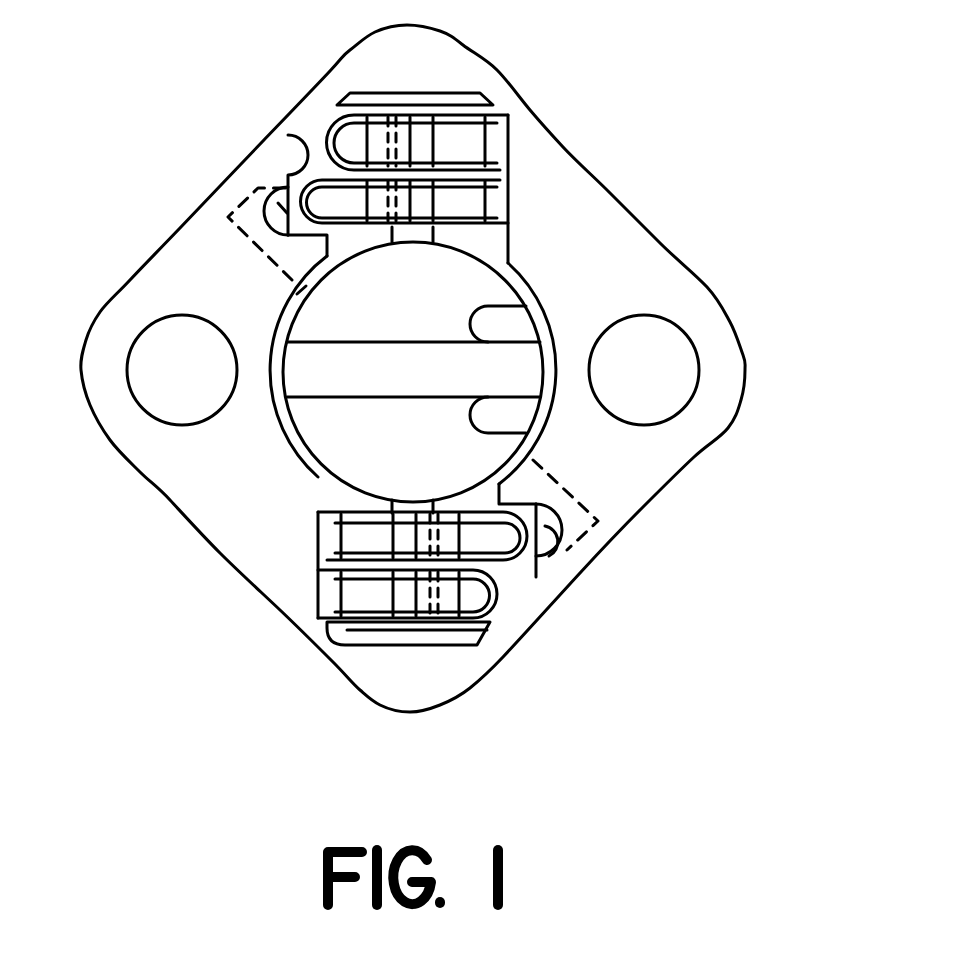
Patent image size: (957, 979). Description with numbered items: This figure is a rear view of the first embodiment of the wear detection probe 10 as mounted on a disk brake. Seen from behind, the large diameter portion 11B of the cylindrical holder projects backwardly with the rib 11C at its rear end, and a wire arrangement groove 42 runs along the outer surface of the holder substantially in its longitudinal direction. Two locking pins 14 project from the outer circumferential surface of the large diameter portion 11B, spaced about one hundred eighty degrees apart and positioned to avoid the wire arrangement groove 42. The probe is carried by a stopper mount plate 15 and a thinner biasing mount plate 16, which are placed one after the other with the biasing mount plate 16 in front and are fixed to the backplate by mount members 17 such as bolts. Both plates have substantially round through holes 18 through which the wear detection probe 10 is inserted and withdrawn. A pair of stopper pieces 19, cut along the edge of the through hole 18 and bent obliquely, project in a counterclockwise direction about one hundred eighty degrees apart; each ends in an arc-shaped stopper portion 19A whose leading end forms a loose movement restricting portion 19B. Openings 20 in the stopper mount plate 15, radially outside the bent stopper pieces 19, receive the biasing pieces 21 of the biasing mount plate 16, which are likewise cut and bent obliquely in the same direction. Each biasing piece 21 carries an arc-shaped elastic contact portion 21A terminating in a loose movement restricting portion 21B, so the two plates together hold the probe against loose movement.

The wear detection probe 10 is at (560, 284).
The large diameter portion 11B is at (325, 428).
The rib 11C is at (310, 372).
The locking pins 14 is at (433, 148).
The stopper mount plate 15 is at (673, 288).
The biasing mount plate 16 is at (545, 556).
The mount members 17 is at (673, 371).
The through holes 18 is at (288, 312).
The stopper pieces 19 is at (467, 203).
The stopper portion 19A is at (400, 540).
The loose movement restricting portion 19B is at (480, 543).
The openings 20 is at (282, 170).
The biasing pieces 21 is at (460, 123).
The elastic contact portion 21A is at (377, 140).
The loose movement restricting portion 21B is at (345, 143).
The wire arrangement groove 42 is at (527, 400).